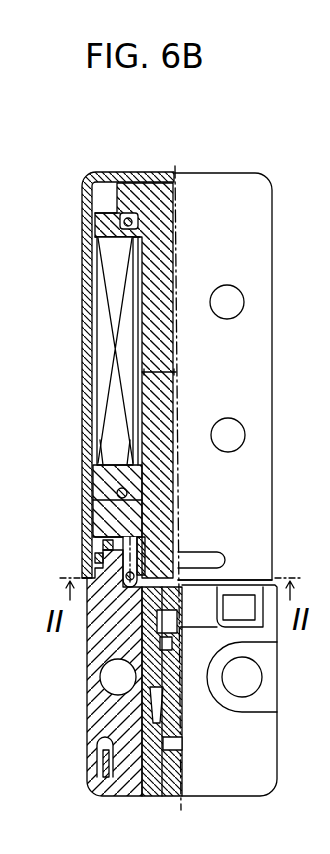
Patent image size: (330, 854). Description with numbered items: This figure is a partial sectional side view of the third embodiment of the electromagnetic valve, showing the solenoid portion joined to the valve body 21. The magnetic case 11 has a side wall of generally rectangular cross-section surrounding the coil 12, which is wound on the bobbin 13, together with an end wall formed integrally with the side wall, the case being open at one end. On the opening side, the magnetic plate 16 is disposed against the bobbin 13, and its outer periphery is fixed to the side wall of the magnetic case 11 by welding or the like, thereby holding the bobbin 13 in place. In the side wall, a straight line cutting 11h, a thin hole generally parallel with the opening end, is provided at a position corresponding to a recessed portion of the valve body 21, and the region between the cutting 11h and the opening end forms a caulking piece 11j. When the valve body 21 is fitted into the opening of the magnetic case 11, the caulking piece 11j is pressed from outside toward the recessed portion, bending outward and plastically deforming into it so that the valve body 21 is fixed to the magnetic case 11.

The magnetic case 11 is at (255, 267).
The straight line cutting 11h is at (210, 556).
The caulking piece 11j is at (197, 578).
The coil 12 is at (110, 295).
The bobbin 13 is at (101, 219).
The magnetic plate 16 is at (103, 513).
The valve body 21 is at (243, 775).